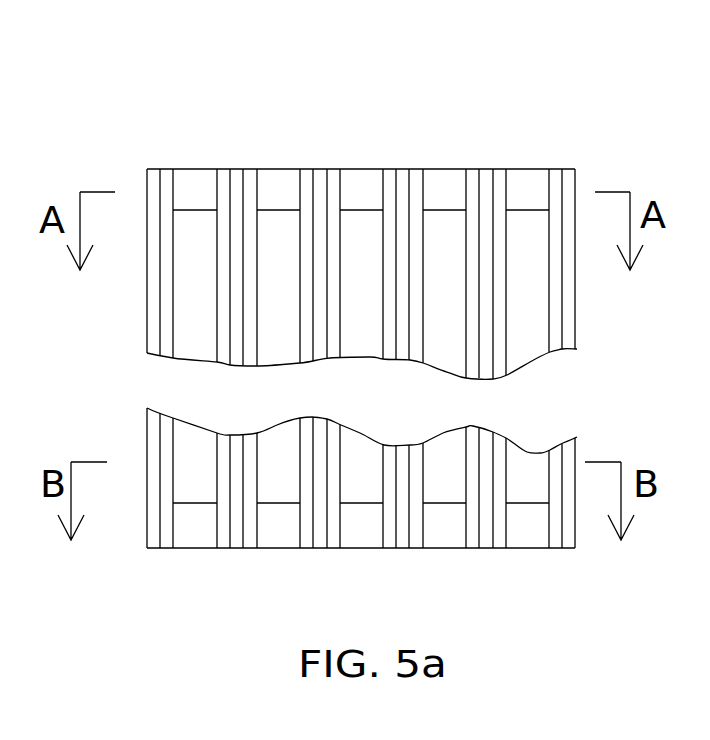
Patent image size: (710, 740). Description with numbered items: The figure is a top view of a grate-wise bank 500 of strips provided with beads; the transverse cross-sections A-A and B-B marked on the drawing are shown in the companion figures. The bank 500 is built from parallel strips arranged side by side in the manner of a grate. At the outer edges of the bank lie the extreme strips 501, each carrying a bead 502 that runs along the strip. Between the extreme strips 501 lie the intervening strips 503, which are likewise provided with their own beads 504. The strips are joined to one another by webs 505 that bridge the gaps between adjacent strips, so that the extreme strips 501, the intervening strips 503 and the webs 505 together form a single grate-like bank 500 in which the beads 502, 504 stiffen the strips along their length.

The grate-wise bank 500 is at (433, 122).
The extreme strips 501 is at (152, 183).
The beads 502 is at (170, 183).
The intervening strips 503 is at (478, 353).
The beads 504 is at (500, 298).
The webs 505 is at (282, 537).